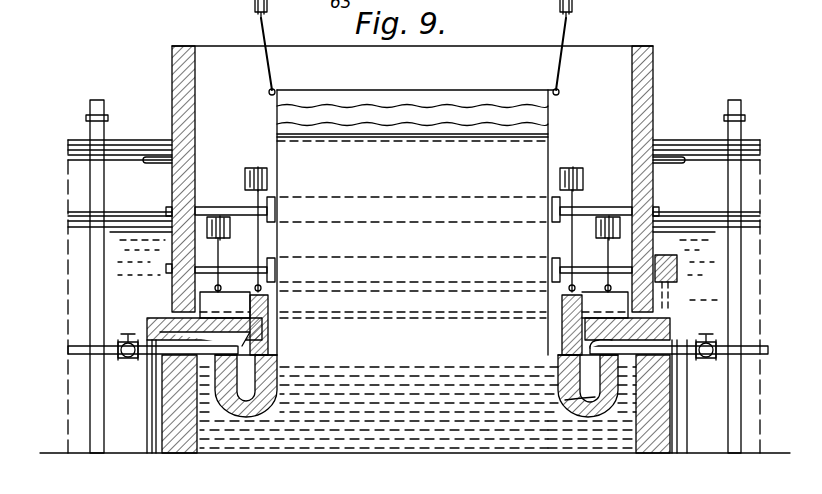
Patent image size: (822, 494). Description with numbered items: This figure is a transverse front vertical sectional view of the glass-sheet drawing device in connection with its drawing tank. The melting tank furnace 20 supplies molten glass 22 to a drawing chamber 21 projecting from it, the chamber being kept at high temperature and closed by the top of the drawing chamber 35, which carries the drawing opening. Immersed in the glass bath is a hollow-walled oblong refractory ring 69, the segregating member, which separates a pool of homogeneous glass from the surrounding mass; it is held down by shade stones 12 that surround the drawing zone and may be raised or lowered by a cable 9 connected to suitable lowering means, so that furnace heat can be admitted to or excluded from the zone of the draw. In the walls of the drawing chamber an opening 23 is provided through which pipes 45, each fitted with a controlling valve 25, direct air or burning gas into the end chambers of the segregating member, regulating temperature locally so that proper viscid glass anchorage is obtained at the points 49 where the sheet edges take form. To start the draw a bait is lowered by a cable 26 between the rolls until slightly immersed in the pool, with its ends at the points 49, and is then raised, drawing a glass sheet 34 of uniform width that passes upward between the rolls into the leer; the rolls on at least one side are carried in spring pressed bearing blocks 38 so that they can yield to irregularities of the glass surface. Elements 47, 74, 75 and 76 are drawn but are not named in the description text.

The cable 9 is at (258, 238).
The shade stones 12 is at (243, 290).
The melting tank furnace 20 is at (760, 150).
The drawing chamber 21 is at (166, 407).
The molten glass 22 is at (238, 447).
The opening 23 is at (150, 340).
The controlling valve 25 is at (125, 340).
The cable 26 is at (258, 26).
The glass sheet 34 is at (540, 152).
The top of the drawing chamber 35 is at (165, 335).
The spring pressed bearing blocks 38 is at (170, 210).
The pipes 45 is at (90, 348).
The trap 47 is at (600, 418).
The points 49 is at (278, 370).
The hollow-walled oblong refractory ring 69 is at (590, 415).
The frame 74 is at (266, 205).
The cover 75 is at (312, 90).
The side wall 76 is at (172, 60).